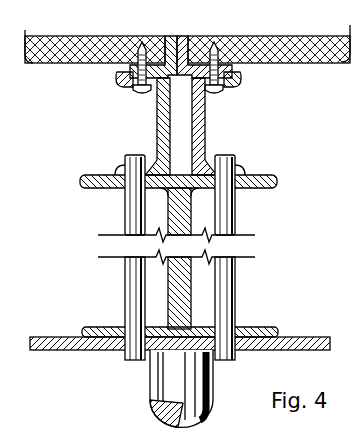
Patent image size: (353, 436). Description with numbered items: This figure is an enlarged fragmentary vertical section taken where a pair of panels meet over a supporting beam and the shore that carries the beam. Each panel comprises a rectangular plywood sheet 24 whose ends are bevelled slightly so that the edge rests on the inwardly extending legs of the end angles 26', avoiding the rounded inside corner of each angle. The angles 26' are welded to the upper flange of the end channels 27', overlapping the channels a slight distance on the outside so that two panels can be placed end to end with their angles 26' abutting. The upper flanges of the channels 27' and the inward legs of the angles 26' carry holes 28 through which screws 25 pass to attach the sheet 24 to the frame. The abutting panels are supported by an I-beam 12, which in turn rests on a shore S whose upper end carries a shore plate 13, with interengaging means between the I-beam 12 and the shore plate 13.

The rectangular sheet 24 is at (62, 66).
The end angles 26' is at (175, 42).
The screws 25 is at (136, 92).
The holes 28 is at (114, 72).
The end channels 27' is at (170, 126).
The I-beam 12 is at (190, 241).
The shore plate 13 is at (322, 334).
The shore S is at (147, 389).